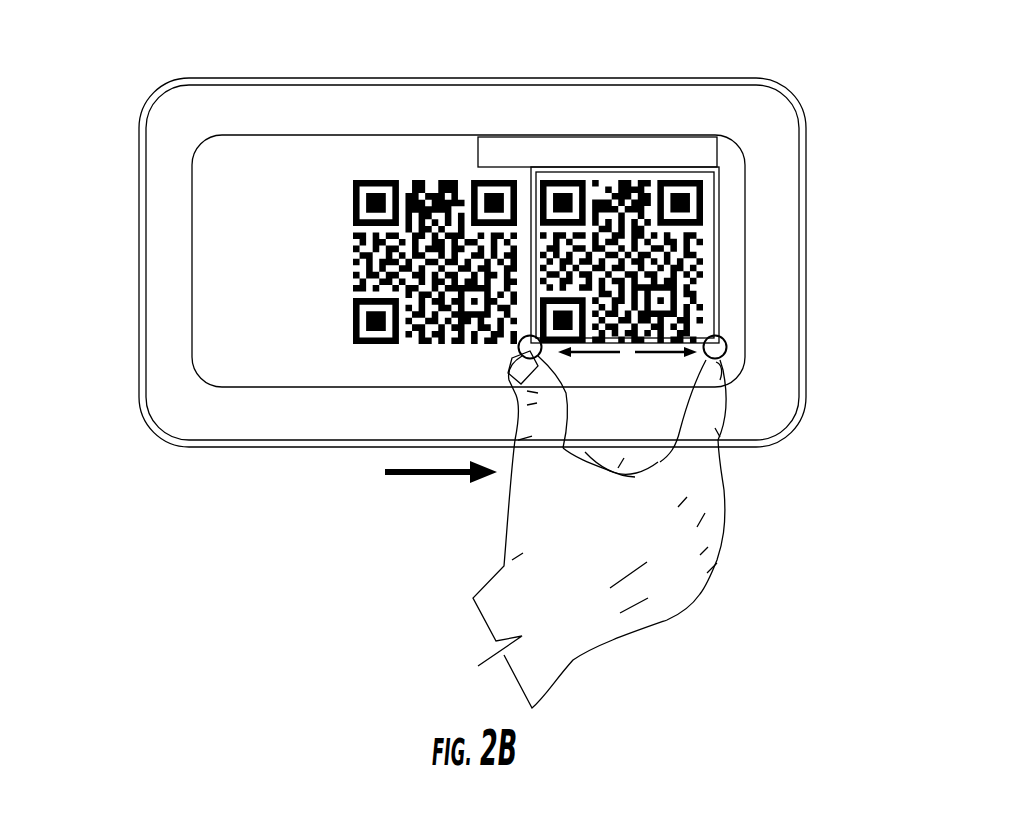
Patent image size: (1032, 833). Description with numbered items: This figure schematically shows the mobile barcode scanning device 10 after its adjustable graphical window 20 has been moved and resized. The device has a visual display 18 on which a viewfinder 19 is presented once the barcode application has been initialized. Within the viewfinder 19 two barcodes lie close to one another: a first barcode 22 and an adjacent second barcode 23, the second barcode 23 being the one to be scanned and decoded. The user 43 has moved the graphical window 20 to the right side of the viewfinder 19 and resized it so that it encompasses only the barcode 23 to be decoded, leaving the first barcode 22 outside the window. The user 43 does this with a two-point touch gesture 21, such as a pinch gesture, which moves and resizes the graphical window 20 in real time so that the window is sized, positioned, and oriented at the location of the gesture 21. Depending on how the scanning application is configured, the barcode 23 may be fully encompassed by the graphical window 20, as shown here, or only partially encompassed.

The mobile barcode scanning device 10 is at (104, 79).
The visual display 18 is at (230, 297).
The viewfinder 19 is at (300, 187).
The graphical window 20 is at (675, 194).
The two-point touch gesture 21 is at (716, 403).
The first barcode 22 is at (425, 172).
The second barcode 23 is at (641, 172).
The user 43 is at (650, 529).